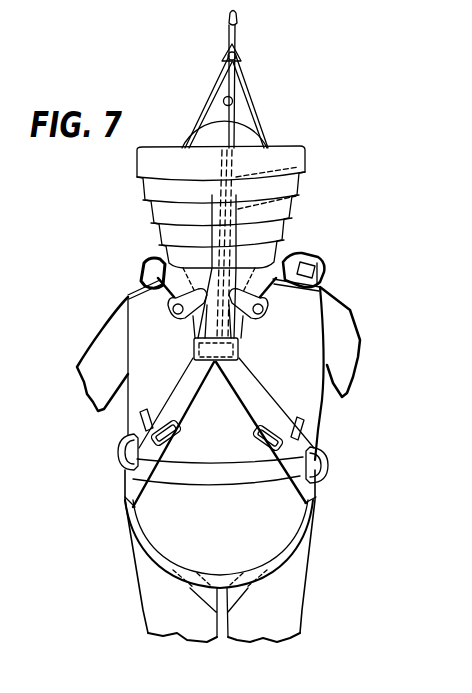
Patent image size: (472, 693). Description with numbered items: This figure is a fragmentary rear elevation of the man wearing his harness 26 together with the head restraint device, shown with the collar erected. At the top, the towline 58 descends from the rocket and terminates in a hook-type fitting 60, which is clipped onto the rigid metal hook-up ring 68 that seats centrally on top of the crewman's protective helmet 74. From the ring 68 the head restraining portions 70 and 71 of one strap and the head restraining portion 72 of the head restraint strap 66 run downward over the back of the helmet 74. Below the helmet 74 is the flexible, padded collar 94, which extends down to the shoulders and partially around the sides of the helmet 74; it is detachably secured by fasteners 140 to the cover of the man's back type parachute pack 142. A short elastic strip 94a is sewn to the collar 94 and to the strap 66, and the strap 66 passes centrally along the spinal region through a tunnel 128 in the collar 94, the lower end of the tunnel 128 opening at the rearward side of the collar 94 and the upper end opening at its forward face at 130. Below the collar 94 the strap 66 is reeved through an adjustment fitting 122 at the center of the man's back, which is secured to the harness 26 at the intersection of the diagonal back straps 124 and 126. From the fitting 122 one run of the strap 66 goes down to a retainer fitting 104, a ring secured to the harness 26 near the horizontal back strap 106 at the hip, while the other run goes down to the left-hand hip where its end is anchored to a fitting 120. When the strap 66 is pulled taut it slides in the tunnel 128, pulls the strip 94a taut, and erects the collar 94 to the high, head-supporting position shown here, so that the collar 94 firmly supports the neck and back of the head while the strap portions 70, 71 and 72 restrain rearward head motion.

The harness 26 is at (154, 255).
The towline 58 is at (238, 17).
The hook-type fitting 60 is at (237, 34).
The head restraint strap 66 is at (170, 393).
The hook-up ring 68 is at (223, 53).
The head restraining portion of strap 64 70 is at (245, 84).
The head restraining portion of strap 64 71 is at (219, 82).
The head restraining portion of strap 66 72 is at (223, 102).
The protective helmet 74 is at (248, 130).
The collar 94 is at (304, 147).
The strip 94a is at (220, 122).
The retainer fitting 104 is at (329, 467).
The horizontal back strap 106 is at (223, 470).
The fitting 120 is at (118, 457).
The adjustment fitting 122 is at (239, 345).
The diagonal back strap 124 is at (248, 430).
The diagonal back strap 126 is at (190, 413).
The tunnel 128 is at (294, 201).
The upper tunnel opening 130 is at (304, 166).
The fasteners 140 is at (172, 310).
The back type parachute pack 142 is at (318, 335).